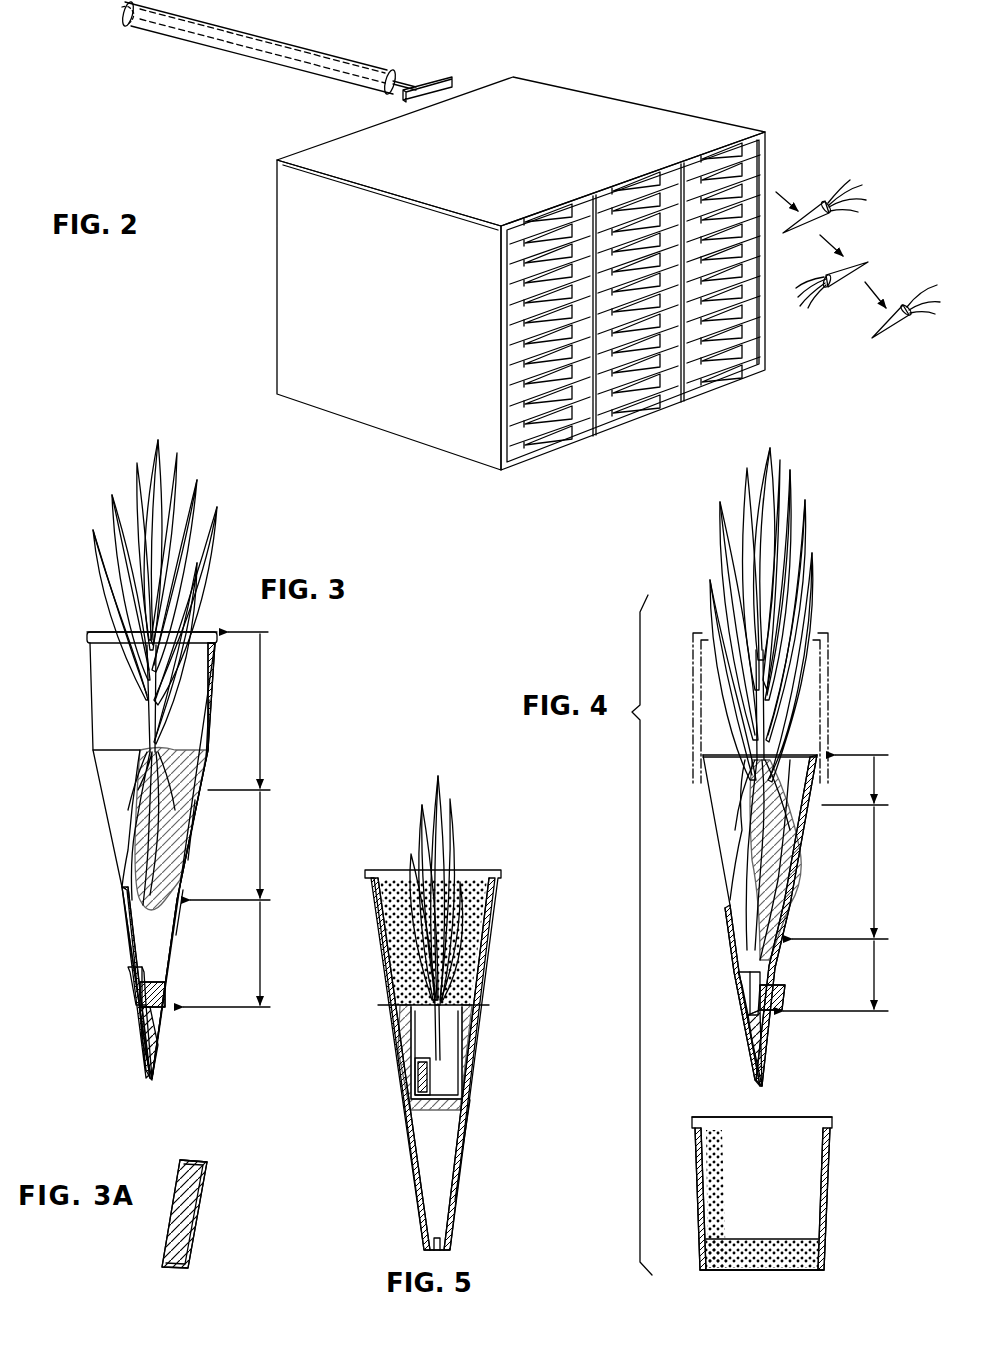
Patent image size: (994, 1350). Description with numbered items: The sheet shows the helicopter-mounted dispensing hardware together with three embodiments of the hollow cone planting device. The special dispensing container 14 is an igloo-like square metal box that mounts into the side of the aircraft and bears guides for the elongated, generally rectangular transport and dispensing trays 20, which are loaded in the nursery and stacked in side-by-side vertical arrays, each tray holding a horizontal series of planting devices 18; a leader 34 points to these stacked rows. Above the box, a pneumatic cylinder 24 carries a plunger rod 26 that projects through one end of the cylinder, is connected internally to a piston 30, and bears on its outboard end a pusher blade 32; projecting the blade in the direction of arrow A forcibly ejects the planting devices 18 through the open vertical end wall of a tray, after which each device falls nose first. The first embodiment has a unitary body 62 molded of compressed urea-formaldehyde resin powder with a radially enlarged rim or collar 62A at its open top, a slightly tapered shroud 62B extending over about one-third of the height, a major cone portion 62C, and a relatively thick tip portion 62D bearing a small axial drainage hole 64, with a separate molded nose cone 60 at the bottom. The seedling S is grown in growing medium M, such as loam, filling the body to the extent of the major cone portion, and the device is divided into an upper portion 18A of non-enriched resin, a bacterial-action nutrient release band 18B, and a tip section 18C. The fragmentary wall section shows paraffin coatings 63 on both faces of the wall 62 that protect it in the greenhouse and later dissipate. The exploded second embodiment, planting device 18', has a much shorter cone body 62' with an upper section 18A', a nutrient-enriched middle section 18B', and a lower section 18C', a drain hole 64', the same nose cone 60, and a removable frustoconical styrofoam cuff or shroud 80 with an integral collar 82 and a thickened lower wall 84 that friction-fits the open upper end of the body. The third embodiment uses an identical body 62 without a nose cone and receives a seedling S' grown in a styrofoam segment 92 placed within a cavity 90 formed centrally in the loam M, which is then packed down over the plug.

In FIG. 2, the special dispensing container 14 is at (679, 114).
In FIG. 2, the hollow cone planting device 18 is at (840, 220).
In FIG. 3, the hollow cone planting device 18 is at (137, 856).
In FIG. 2, the transport and dispensing tray 20 is at (756, 188).
In FIG. 2, the pneumatic cylinder 24 is at (266, 62).
In FIG. 2, the plunger rod 26 is at (403, 79).
In FIG. 2, the piston 30 is at (127, 24).
In FIG. 2, the pusher blade 32 is at (450, 78).
In FIG. 2, the tray columns 34 is at (600, 220).
In FIG. 2, the direction arrow A is at (478, 101).
In FIG. 2, the seedling S is at (835, 265).
In FIG. 3, the seedling S is at (166, 596).
In FIG. 4, the seedling S is at (780, 615).
In FIG. 3, the growing medium M is at (209, 749).
In FIG. 4, the growing medium M is at (822, 750).
In FIG. 5, the growing medium M is at (480, 1025).
In FIG. 3, the body 62 is at (210, 830).
In FIG. 3A, the body 62 is at (203, 1214).
In FIG. 5, the body 62 is at (478, 1150).
In FIG. 3, the rim or collar 62A is at (211, 640).
In FIG. 3, the shroud 62B is at (210, 736).
In FIG. 3, the major cone portion 62C is at (186, 933).
In FIG. 3, the tip portion 62D is at (168, 994).
In FIG. 3A, the coating 63 is at (207, 1162).
In FIG. 3, the drainage hole 64 is at (118, 986).
In FIG. 3, the nose cone 60 is at (160, 1066).
In FIG. 4, the nose cone 60 is at (770, 1068).
In FIG. 3, the upper portion 18A is at (256, 711).
In FIG. 3, the nutrient enriched section 18B is at (248, 846).
In FIG. 3, the tip section 18C is at (243, 954).
In FIG. 4, the planting device 18' is at (745, 920).
In FIG. 4, the body 62' is at (791, 957).
In FIG. 4, the drain hole 64' is at (730, 999).
In FIG. 4, the removable styrofoam cuff or shroud 80 is at (825, 712).
In FIG. 4, the collar 82 is at (832, 1120).
In FIG. 4, the thickened side wall portion 84 is at (826, 1265).
In FIG. 4, the upper section 18A' is at (867, 780).
In FIG. 4, the middle section 18B' is at (852, 873).
In FIG. 4, the lower section 18C' is at (850, 976).
In FIG. 5, the cavity 90 is at (465, 1045).
In FIG. 5, the styrofoam segment 92 is at (416, 1076).
In FIG. 5, the small seedling S' is at (468, 918).